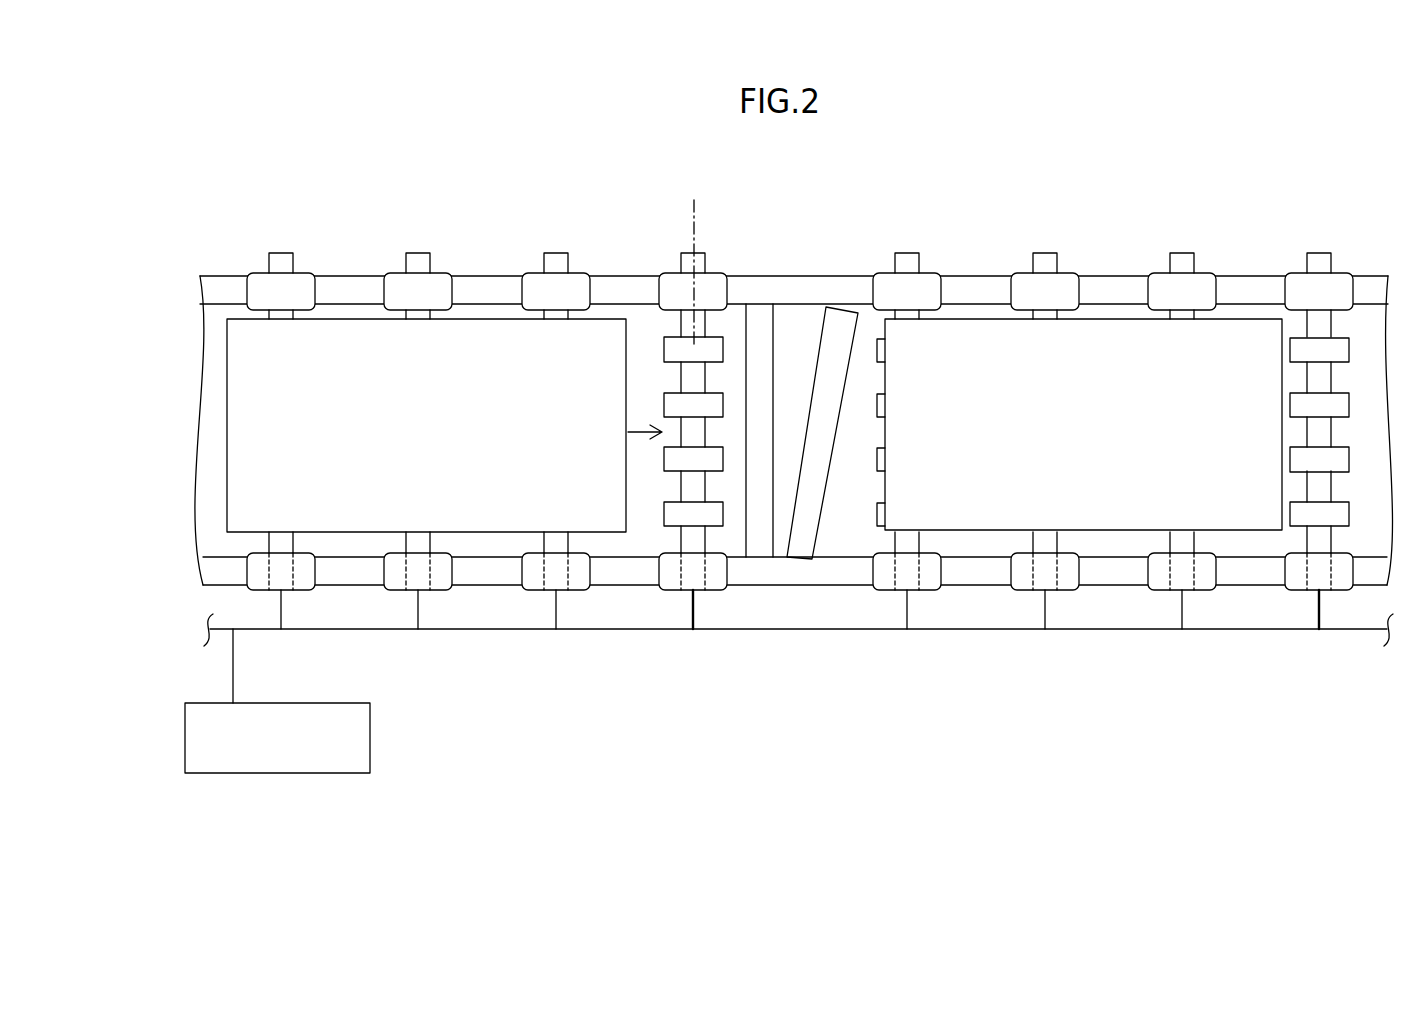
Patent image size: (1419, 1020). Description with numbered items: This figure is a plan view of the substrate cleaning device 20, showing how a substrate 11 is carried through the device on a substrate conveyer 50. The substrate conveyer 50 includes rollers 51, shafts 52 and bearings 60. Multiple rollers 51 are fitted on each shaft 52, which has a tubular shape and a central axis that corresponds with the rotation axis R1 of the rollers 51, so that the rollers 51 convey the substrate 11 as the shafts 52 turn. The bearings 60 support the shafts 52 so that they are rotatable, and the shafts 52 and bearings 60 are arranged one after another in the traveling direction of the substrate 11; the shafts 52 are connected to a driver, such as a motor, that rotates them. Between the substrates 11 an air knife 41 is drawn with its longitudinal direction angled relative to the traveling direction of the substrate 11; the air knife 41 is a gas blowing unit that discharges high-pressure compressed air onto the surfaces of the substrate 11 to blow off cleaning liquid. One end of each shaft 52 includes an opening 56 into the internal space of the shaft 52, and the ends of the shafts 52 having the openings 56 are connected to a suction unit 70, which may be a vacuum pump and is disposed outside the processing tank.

The substrate cleaning device 20 is at (226, 245).
The substrate 11 is at (337, 345).
The air knife 41 is at (827, 357).
The substrate conveyer 50 is at (743, 606).
The roller 51 is at (675, 512).
The shaft 52 is at (551, 258).
The opening 56 is at (700, 575).
The bearing 60 is at (573, 288).
The suction unit 70 is at (355, 738).
The rotation axis R1 is at (698, 258).